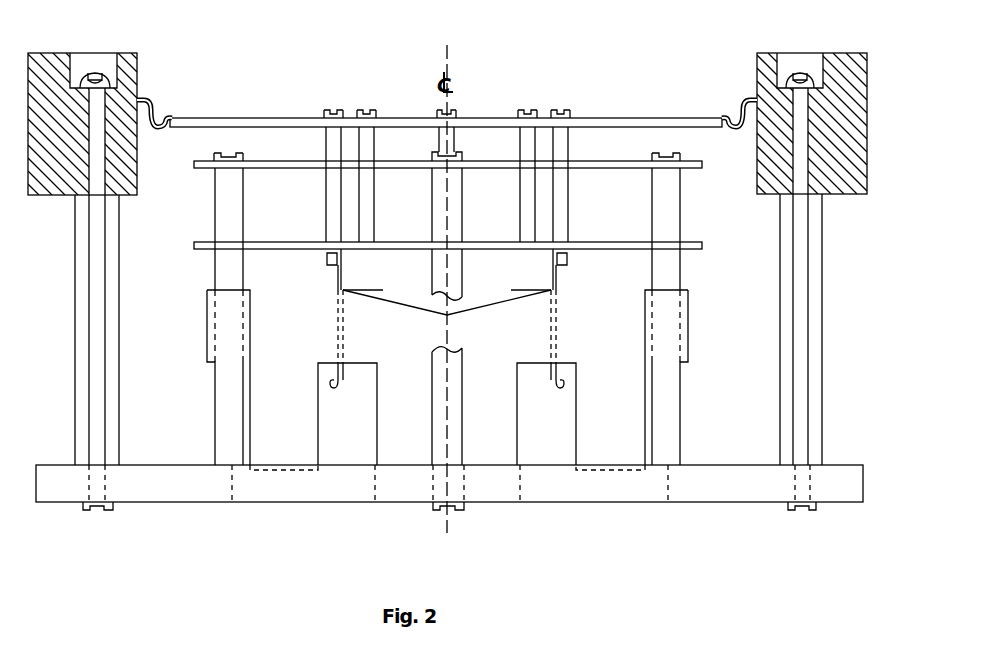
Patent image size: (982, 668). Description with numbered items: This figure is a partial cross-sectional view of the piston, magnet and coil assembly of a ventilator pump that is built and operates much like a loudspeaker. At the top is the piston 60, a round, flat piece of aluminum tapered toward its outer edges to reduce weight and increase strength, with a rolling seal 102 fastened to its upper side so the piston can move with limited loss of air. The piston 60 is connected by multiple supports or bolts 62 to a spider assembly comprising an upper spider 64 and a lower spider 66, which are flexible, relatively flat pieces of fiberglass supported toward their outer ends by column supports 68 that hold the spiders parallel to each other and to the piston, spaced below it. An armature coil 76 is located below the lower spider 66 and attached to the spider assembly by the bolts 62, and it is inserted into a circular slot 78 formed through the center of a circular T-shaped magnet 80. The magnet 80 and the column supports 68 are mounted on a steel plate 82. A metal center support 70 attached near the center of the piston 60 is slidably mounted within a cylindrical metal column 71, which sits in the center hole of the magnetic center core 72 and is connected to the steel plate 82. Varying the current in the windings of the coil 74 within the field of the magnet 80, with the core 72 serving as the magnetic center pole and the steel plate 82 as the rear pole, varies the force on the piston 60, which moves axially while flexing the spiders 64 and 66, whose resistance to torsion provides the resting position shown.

The piston 60 is at (291, 117).
The bolts 62 is at (325, 218).
The upper spider 64 is at (193, 160).
The lower spider 66 is at (200, 249).
The column supports 68 is at (212, 188).
The metal center support 70 is at (437, 143).
The cylindrical metal column 71 is at (432, 190).
The magnetic center core 72 is at (447, 396).
The coil 74 is at (342, 396).
The armature coil 76 is at (332, 272).
The circular slot 78 is at (346, 289).
The magnet 80 is at (206, 335).
The steel plate 82 is at (705, 465).
The rolling seal 102 is at (157, 113).